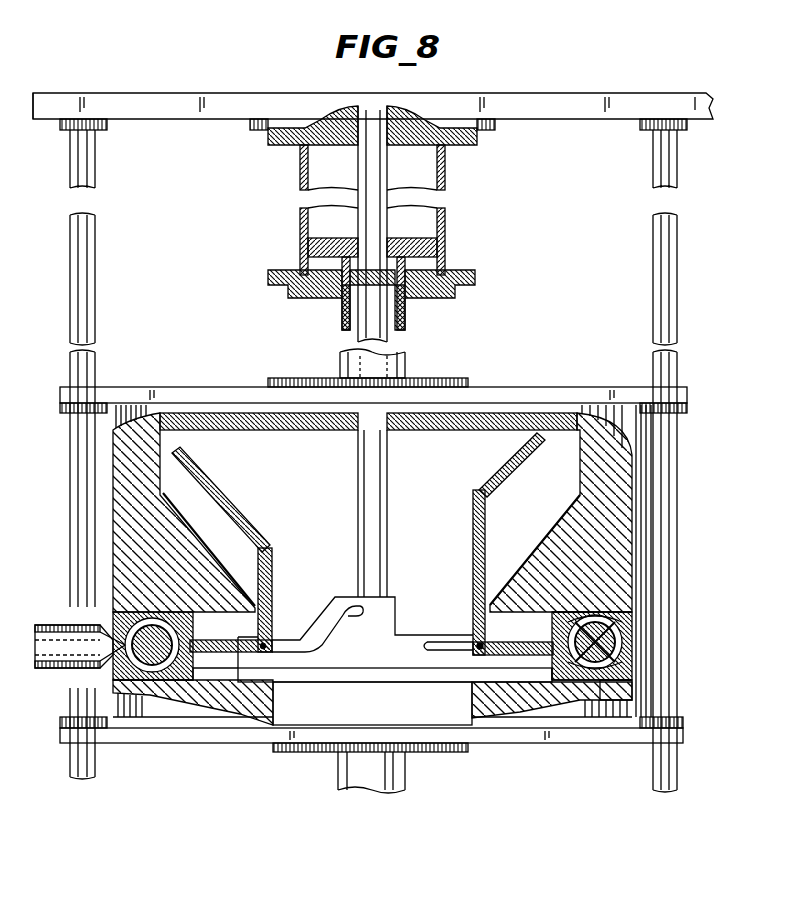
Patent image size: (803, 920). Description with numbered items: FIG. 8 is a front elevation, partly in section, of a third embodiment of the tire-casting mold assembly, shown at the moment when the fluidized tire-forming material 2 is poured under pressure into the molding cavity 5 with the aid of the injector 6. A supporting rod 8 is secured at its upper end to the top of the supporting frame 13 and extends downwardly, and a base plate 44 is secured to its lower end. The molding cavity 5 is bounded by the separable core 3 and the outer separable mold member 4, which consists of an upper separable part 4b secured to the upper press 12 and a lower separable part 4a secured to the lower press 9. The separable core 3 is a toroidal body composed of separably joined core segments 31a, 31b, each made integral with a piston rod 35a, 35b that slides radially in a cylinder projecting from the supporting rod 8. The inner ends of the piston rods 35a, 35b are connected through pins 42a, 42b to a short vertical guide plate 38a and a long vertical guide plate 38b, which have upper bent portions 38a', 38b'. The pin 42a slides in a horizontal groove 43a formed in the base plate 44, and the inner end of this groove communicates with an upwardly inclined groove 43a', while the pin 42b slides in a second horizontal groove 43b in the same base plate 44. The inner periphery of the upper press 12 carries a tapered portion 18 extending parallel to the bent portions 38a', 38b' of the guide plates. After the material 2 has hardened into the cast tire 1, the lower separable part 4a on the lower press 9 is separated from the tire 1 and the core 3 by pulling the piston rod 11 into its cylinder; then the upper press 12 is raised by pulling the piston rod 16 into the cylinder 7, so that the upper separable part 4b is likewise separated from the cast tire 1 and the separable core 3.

The supporting frame 13 is at (525, 95).
The supporting rod 8 is at (383, 163).
The cylinder 7 is at (437, 255).
The piston rod 16 is at (405, 305).
The injector 6 is at (50, 625).
The fluidized tire-forming material 2 is at (48, 670).
The separable core 3 is at (603, 577).
The tapered portion 18 is at (210, 487).
The upper bent portion 38a' is at (239, 544).
The short vertical guide plate 38a is at (267, 585).
The upper bent portion 38b' is at (506, 520).
The long vertical guide plate 38b is at (483, 572).
The horizontal groove 43a is at (355, 714).
The upwardly inclined groove 43a' is at (395, 555).
The horizontal groove 43b is at (430, 645).
The pin 42a is at (263, 660).
The pin 42b is at (487, 640).
The molding cavity 5 is at (630, 648).
The outer separable mold member 4 is at (630, 658).
The lower separable part 4a is at (633, 675).
The upper separable part 4b is at (627, 633).
The cast tire 1 is at (627, 635).
The upper press 12 is at (627, 565).
The core segment 31a is at (153, 700).
The core segment 31b is at (580, 700).
The piston rod 35a is at (217, 645).
The piston rod 35b is at (537, 707).
The lower press 9 is at (613, 693).
The base plate 44 is at (347, 650).
The piston rod 11 is at (402, 775).